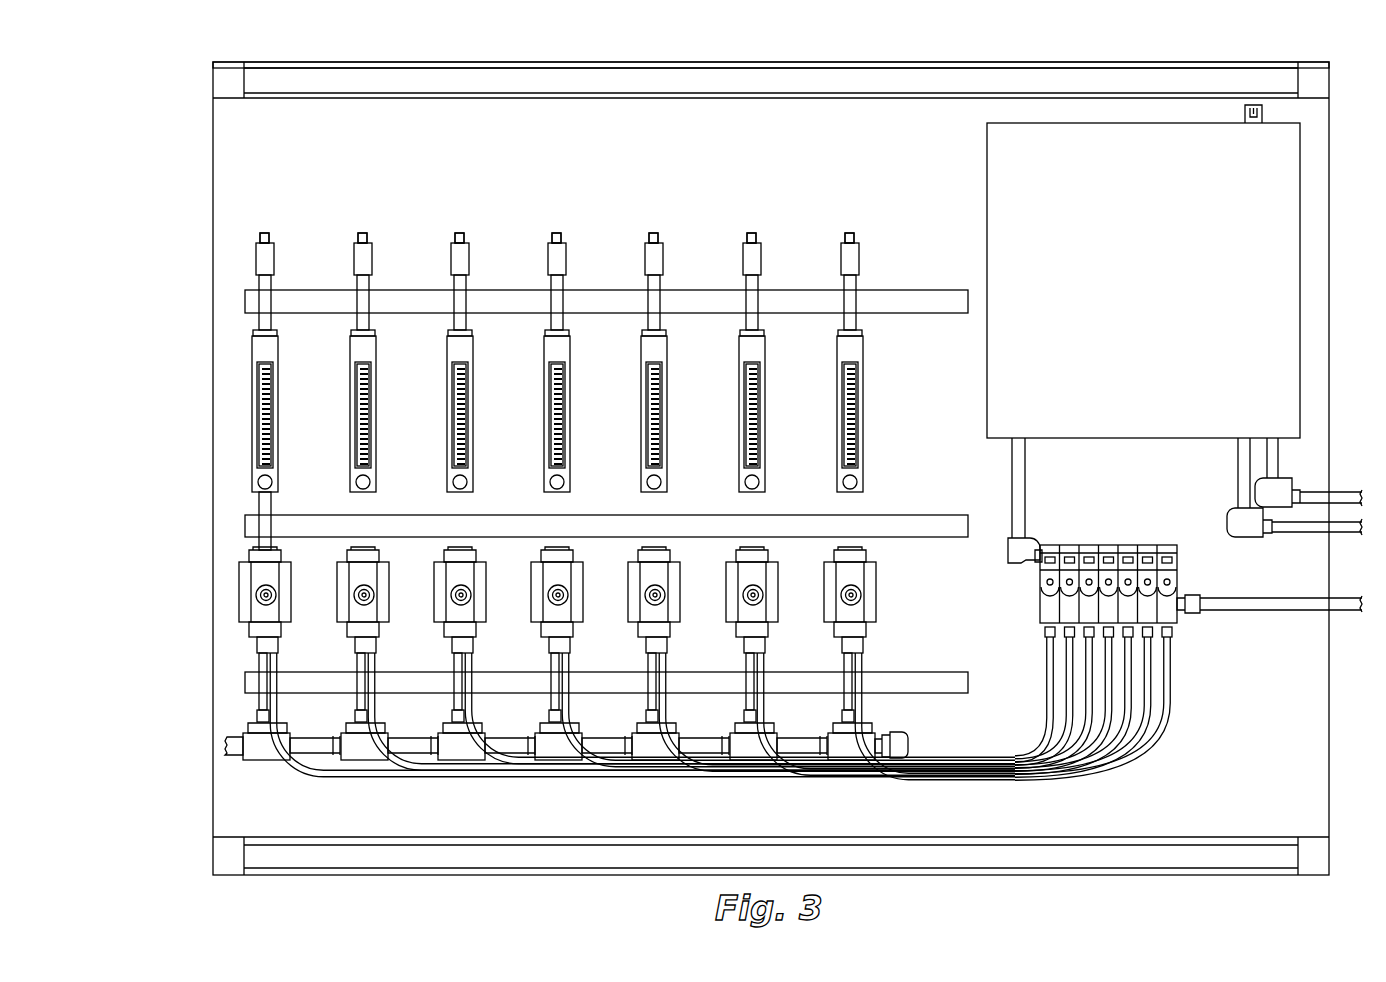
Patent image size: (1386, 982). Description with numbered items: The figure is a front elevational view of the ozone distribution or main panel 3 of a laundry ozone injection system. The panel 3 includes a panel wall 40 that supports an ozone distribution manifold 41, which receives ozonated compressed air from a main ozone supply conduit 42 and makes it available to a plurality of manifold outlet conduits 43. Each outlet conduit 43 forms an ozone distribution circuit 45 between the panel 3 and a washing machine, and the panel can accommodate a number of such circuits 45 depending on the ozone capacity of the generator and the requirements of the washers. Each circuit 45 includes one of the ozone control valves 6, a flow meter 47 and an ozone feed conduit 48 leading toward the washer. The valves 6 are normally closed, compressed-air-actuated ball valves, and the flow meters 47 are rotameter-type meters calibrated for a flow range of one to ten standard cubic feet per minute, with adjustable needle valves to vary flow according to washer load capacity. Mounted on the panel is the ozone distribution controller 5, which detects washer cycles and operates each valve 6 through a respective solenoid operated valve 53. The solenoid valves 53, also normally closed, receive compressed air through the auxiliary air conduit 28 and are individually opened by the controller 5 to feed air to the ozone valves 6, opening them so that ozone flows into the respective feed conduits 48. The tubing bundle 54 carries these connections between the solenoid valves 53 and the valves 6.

The ozone distribution panel 3 is at (500, 55).
The panel wall 40 is at (222, 150).
The ozone feed conduit 48 is at (459, 232).
The flow meter 47 is at (252, 400).
The ozone distribution circuit 45 is at (250, 511).
The ozone control valve 6 is at (337, 592).
The manifold outlet conduit 43 is at (365, 678).
The main ozone supply conduit 42 is at (228, 740).
The ozone distribution manifold 41 is at (916, 745).
The tubing bundle 54 is at (950, 773).
The solenoid operated valve 53 is at (1130, 546).
The ozone distribution controller 5 is at (1292, 200).
The auxiliary air conduit 28 is at (1342, 613).